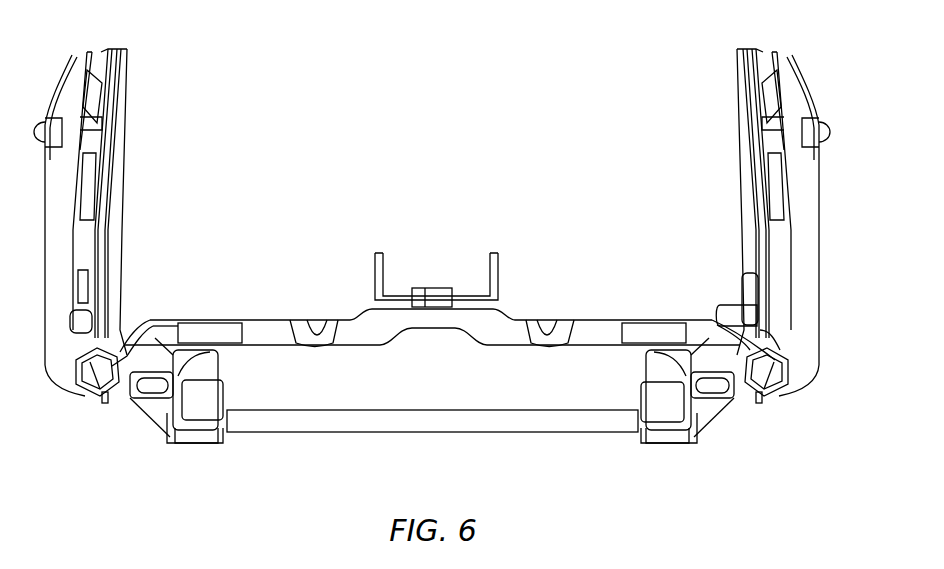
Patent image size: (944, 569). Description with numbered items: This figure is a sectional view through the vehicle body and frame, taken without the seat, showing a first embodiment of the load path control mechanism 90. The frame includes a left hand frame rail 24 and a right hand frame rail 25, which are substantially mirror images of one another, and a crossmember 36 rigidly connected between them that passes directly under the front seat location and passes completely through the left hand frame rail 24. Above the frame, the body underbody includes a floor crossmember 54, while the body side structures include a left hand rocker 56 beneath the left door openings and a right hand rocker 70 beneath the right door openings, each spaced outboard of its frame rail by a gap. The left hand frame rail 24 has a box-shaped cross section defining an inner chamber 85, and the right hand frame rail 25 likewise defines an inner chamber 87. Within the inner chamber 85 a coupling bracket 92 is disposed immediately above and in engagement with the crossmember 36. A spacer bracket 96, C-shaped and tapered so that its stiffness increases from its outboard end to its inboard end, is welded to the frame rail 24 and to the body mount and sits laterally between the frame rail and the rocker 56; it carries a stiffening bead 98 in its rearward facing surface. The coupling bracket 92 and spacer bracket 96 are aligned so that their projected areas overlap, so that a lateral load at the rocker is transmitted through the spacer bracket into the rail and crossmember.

The left hand frame rail 24 is at (645, 360).
The right hand frame rail 25 is at (220, 360).
The crossmember 36 is at (377, 403).
The floor crossmember 54 is at (320, 320).
The left hand rocker 56 is at (767, 392).
The right hand rocker 70 is at (95, 387).
The inner chamber 85 is at (663, 350).
The inner chamber 87 is at (192, 352).
The load path control mechanism 90 is at (155, 437).
The coupling bracket 92 is at (227, 401).
The spacer bracket 96 is at (150, 403).
The stiffening bead 98 is at (723, 392).